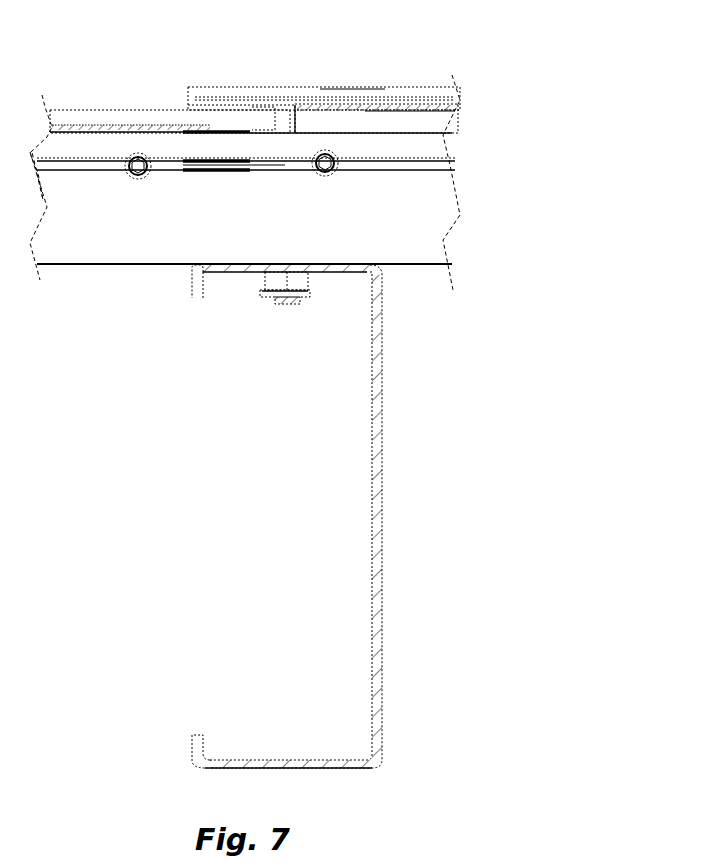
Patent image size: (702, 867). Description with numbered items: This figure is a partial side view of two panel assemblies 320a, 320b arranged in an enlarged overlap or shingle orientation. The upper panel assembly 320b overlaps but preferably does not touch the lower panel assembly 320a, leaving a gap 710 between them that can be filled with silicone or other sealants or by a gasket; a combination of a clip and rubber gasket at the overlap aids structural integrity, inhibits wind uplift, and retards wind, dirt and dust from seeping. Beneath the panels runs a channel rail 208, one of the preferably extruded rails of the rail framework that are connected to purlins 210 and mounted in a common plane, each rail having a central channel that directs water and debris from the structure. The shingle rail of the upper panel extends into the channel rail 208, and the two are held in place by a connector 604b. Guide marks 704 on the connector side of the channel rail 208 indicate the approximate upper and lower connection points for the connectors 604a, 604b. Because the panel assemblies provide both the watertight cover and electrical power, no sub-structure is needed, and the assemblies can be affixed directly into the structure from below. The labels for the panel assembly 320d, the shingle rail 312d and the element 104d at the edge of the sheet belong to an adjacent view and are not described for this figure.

The channel rail 208 is at (128, 237).
The purlin 210 is at (375, 474).
The lower panel assembly 320a is at (63, 90).
The upper panel assembly 320b is at (441, 74).
The gap 710 is at (175, 103).
The guide marks 704 is at (287, 164).
The connector 604a is at (136, 174).
The connector 604b is at (330, 170).
The floor panel 320d is at (410, 864).
The support member 312d is at (523, 862).
The frame member 104d is at (622, 863).